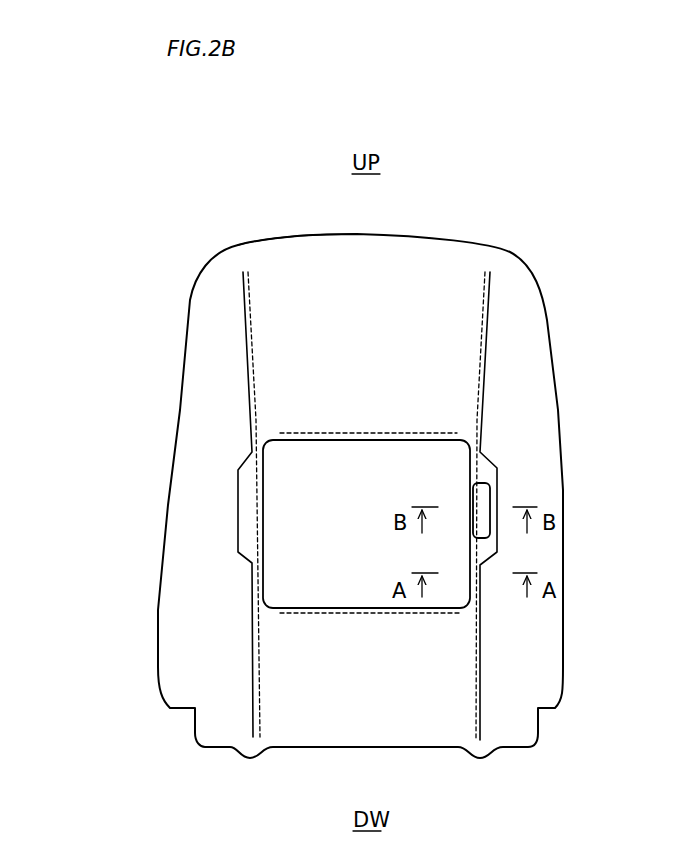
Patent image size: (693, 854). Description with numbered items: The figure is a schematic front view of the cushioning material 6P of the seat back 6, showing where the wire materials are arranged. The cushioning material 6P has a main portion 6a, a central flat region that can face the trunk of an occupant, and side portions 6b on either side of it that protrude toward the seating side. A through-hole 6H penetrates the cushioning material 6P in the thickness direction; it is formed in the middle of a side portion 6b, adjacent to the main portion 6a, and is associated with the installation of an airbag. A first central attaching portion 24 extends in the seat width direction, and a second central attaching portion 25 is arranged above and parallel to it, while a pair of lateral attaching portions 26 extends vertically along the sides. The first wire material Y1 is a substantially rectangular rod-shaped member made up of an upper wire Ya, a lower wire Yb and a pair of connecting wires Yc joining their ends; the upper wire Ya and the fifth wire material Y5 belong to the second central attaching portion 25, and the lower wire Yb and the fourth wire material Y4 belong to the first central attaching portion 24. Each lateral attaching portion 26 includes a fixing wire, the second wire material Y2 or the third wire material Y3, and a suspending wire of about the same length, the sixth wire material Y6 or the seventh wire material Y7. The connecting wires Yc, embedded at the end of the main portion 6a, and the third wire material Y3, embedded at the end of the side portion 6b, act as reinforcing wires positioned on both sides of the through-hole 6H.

The cushioning material 6P is at (548, 315).
The seat back 6 is at (297, 239).
The main portion 6a is at (380, 306).
The side portions 6b is at (225, 371).
The through-hole 6H is at (480, 513).
The lateral attaching portions 26 is at (238, 268).
The second central attaching portion 25 is at (303, 443).
The first central attaching portion 24 is at (308, 610).
The first wire material Y1 is at (636, 493).
The upper wire Ya is at (427, 442).
The lower wire Yb is at (440, 610).
The connecting wires Yc is at (263, 503).
The second wire material Y2 is at (248, 397).
The third wire material Y3 is at (485, 398).
The fourth wire material Y4 is at (375, 613).
The fifth wire material Y5 is at (372, 433).
The sixth wire material Y6 is at (260, 355).
The seventh wire material Y7 is at (477, 353).